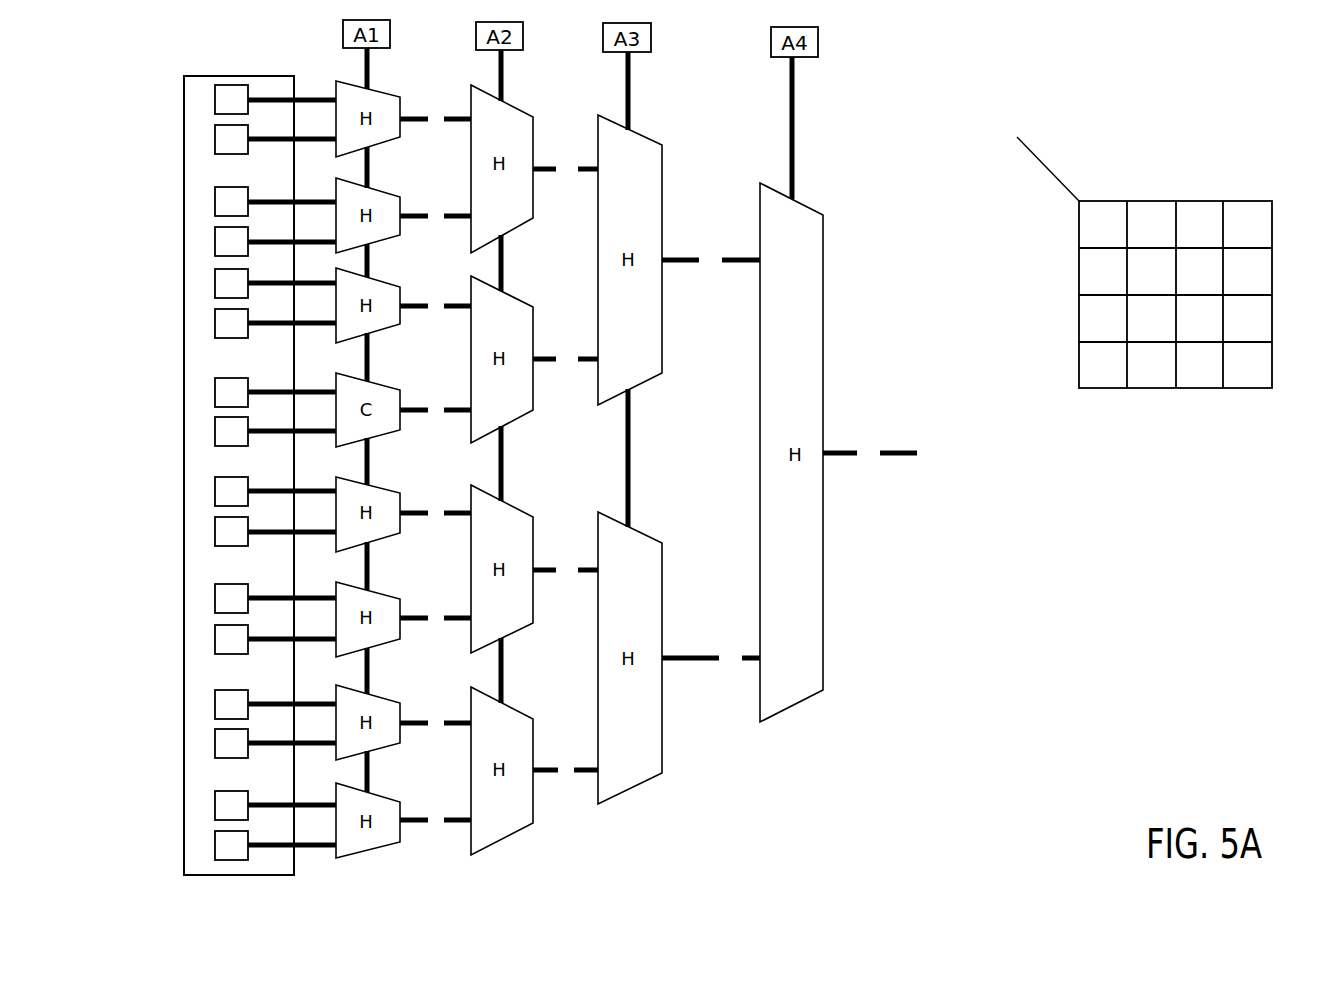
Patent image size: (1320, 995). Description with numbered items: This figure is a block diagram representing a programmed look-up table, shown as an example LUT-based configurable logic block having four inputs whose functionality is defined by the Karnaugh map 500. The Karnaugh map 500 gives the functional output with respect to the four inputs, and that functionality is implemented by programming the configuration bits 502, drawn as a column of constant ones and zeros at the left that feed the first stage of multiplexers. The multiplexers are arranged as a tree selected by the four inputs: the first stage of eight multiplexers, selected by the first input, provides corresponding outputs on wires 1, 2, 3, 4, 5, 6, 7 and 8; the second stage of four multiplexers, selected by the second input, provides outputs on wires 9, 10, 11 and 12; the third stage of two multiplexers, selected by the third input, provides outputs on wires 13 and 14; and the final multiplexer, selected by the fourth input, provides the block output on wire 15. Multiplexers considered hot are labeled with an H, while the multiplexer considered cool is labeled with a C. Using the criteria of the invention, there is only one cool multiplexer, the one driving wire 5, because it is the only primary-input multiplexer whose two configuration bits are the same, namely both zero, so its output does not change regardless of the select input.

The wire 1 is at (435, 819).
The wire 2 is at (435, 722).
The wire 3 is at (435, 617).
The wire 4 is at (435, 512).
The wire 5 is at (435, 409).
The wire 6 is at (435, 305).
The wire 7 is at (435, 215).
The wire 8 is at (435, 118).
The wire 9 is at (565, 769).
The wire 10 is at (565, 569).
The wire 11 is at (565, 358).
The wire 12 is at (565, 168).
The wire 13 is at (711, 657).
The wire 14 is at (711, 259).
The wire 15 is at (870, 452).
The Karnaugh map 500 is at (1135, 291).
The configuration bits 502 is at (253, 76).